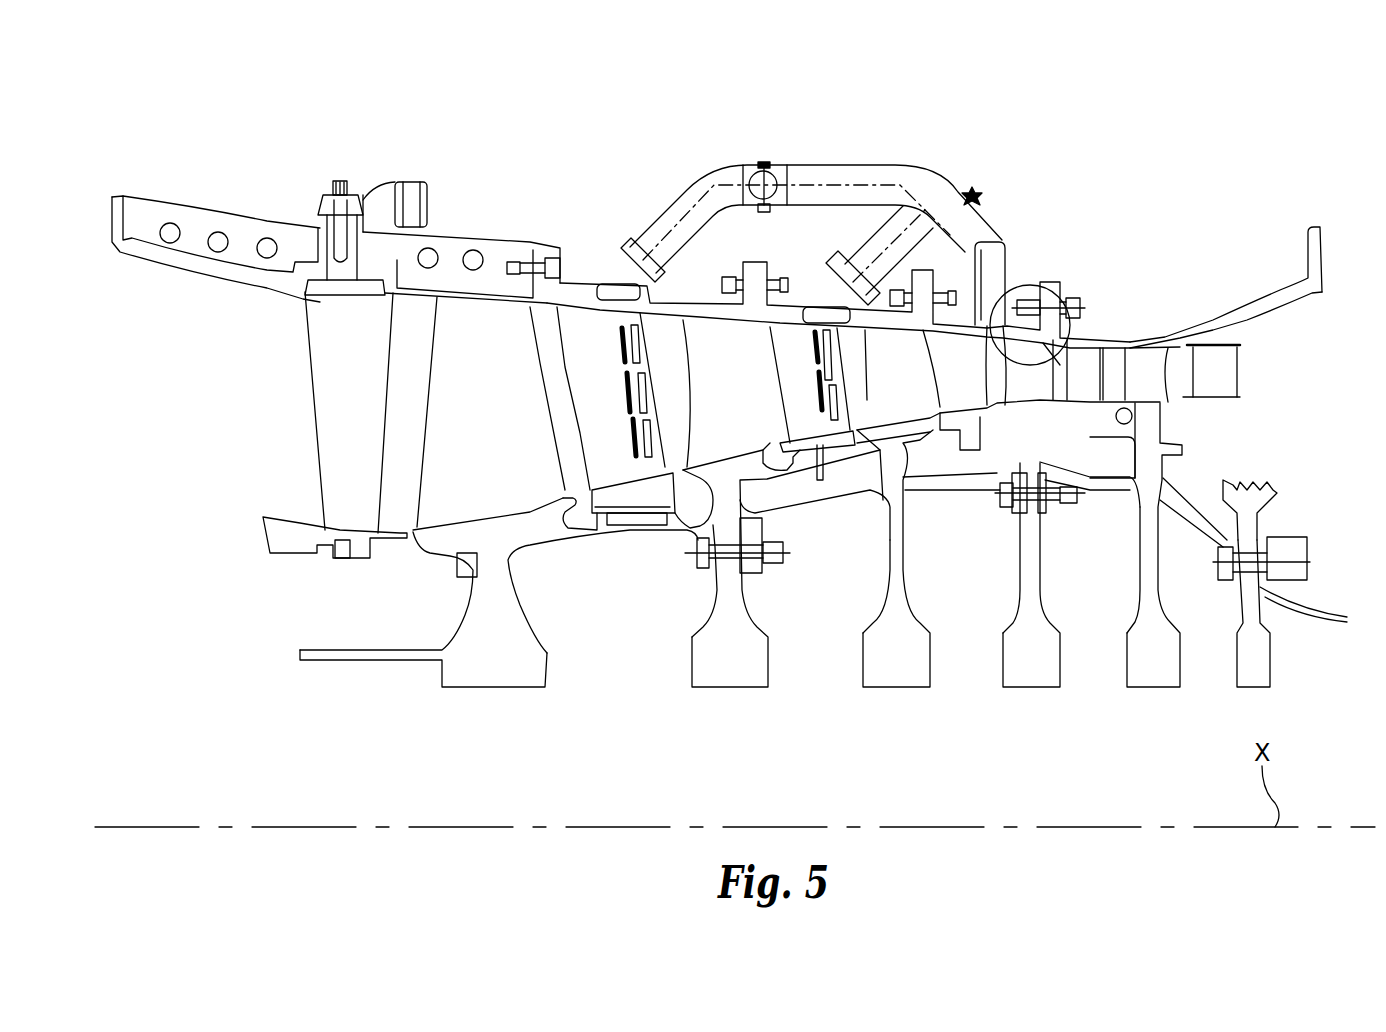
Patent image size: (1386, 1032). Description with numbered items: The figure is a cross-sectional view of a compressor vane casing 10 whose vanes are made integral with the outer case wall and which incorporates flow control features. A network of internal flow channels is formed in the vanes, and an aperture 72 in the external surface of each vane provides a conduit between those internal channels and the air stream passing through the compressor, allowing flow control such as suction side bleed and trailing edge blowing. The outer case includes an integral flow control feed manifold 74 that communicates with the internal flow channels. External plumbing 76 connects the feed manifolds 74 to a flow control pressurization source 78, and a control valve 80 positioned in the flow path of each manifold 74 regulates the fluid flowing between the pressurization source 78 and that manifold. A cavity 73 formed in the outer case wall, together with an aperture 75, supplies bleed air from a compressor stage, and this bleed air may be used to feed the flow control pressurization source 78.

The compressor vane casing 10 is at (935, 136).
The aperture 72 is at (813, 373).
The cavity 73 is at (1060, 365).
The integral flow control feed manifold 74 is at (808, 308).
The aperture 75 is at (1010, 282).
The external plumbing 76 is at (833, 162).
The flow control pressurization source 78 is at (990, 268).
The control valve 80 is at (757, 158).